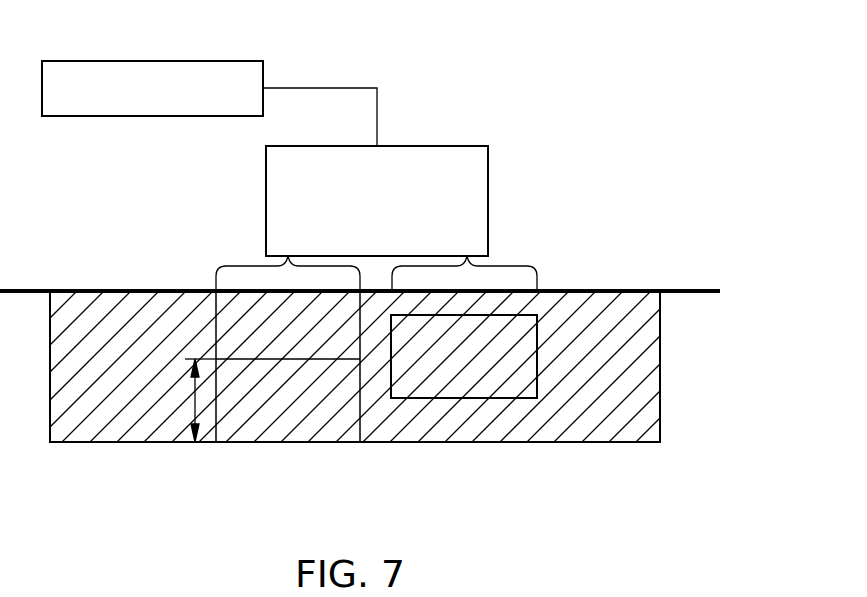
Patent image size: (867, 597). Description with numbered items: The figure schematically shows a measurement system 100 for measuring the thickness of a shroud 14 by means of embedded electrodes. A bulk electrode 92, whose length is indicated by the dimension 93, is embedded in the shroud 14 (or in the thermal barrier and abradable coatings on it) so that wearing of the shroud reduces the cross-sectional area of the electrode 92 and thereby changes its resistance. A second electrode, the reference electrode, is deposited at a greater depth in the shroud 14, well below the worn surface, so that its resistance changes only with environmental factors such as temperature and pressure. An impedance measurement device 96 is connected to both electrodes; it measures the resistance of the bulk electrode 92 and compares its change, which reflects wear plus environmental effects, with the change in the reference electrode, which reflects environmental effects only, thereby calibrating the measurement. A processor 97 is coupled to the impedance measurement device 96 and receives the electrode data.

The processor 97 is at (112, 61).
The impedance measurement device 96 is at (488, 198).
The shroud 14 is at (672, 290).
The bulk electrode 92 is at (277, 432).
The length of the bulk electrode 93 is at (195, 402).
The measurement system 100 is at (663, 68).